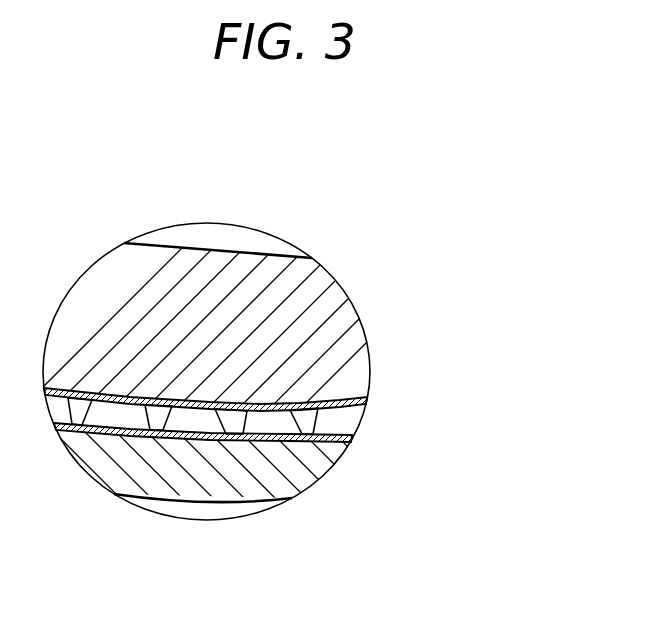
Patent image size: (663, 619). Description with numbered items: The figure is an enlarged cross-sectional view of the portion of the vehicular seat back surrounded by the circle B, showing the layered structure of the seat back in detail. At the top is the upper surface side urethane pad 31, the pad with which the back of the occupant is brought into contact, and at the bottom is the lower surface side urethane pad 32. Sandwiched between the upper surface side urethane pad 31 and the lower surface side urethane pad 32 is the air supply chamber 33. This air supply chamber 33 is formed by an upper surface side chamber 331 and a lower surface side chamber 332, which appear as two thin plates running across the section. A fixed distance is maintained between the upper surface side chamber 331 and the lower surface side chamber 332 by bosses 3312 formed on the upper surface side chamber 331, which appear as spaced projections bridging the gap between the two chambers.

The circle B is at (230, 223).
The upper surface side urethane pad 31 is at (283, 290).
The lower surface side urethane pad 32 is at (235, 488).
The air supply chamber 33 is at (263, 416).
The upper surface side chamber 331 is at (365, 400).
The bosses 3312 is at (308, 422).
The lower surface side chamber 332 is at (350, 438).